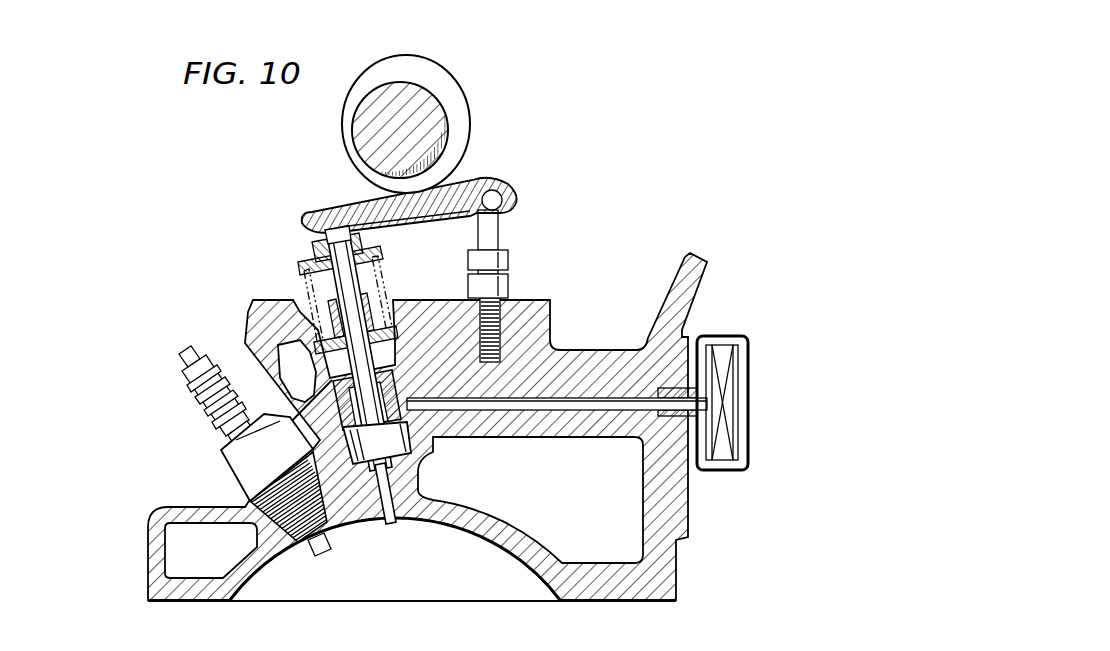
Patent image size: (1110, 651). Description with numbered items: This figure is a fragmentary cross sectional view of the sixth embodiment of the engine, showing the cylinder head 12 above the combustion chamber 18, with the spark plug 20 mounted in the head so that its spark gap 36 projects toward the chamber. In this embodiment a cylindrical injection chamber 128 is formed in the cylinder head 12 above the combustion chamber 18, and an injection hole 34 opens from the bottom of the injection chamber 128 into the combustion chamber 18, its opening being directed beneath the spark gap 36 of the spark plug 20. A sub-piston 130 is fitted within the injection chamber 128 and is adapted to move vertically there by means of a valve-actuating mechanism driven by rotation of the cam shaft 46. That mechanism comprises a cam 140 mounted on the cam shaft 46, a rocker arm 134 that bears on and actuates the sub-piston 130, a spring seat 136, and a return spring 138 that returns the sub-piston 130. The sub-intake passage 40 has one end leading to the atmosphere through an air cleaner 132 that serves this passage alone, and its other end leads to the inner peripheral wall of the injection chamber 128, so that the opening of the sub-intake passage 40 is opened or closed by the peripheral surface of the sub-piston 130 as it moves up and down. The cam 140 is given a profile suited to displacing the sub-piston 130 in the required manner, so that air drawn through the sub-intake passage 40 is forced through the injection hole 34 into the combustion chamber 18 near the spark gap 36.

The cylinder head 12 is at (172, 507).
The combustion chamber 18 is at (477, 591).
The spark plug 20 is at (223, 448).
The injection hole 34 is at (392, 523).
The spark gap 36 is at (323, 543).
The sub-intake passage 40 is at (600, 403).
The cam shaft 46 is at (358, 126).
The cylindrical injection chamber 128 is at (412, 447).
The sub-piston 130 is at (400, 377).
The air cleaner 132 is at (732, 337).
The rocker arm 134 is at (330, 213).
The spring seat 136 is at (307, 247).
The return spring 138 is at (305, 267).
The cam 140 is at (458, 112).